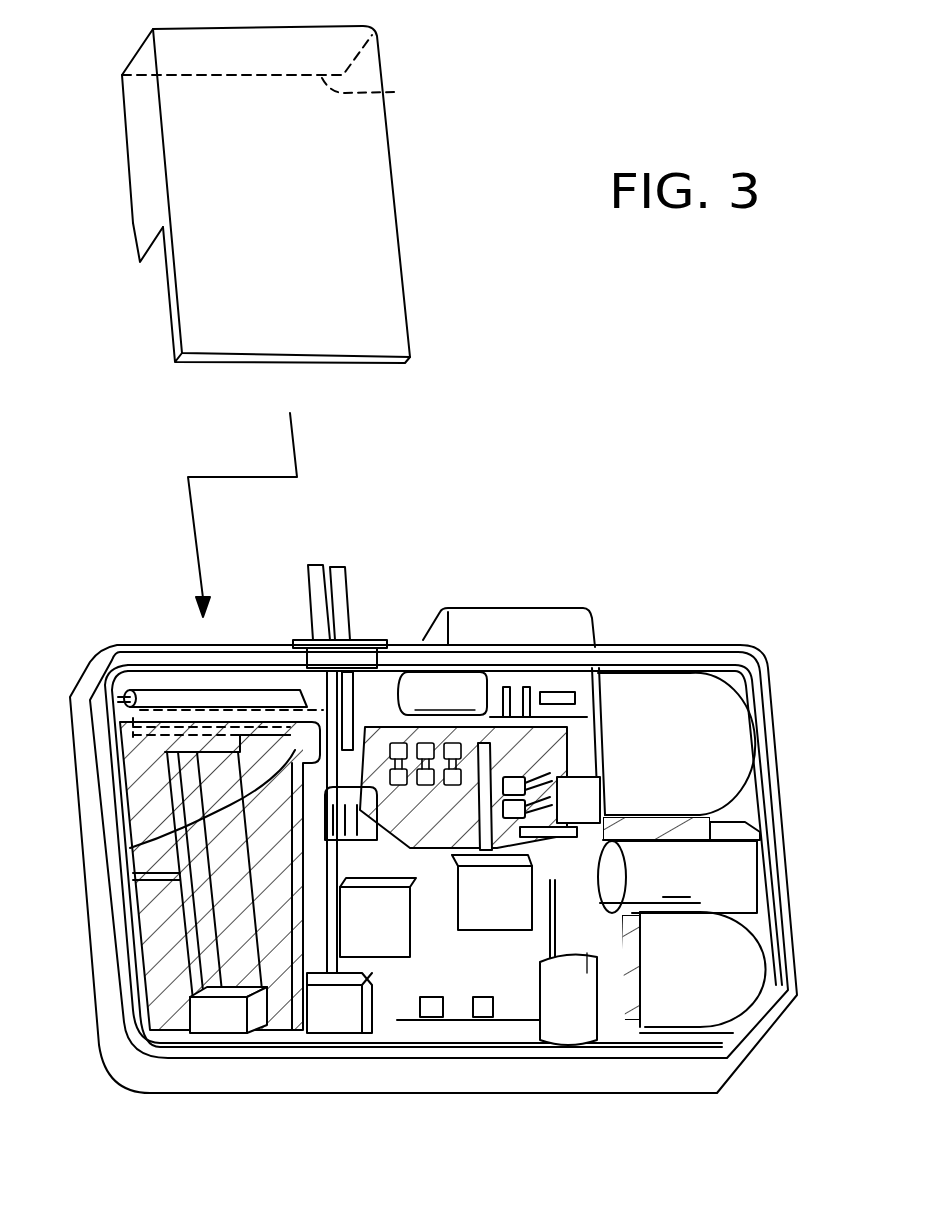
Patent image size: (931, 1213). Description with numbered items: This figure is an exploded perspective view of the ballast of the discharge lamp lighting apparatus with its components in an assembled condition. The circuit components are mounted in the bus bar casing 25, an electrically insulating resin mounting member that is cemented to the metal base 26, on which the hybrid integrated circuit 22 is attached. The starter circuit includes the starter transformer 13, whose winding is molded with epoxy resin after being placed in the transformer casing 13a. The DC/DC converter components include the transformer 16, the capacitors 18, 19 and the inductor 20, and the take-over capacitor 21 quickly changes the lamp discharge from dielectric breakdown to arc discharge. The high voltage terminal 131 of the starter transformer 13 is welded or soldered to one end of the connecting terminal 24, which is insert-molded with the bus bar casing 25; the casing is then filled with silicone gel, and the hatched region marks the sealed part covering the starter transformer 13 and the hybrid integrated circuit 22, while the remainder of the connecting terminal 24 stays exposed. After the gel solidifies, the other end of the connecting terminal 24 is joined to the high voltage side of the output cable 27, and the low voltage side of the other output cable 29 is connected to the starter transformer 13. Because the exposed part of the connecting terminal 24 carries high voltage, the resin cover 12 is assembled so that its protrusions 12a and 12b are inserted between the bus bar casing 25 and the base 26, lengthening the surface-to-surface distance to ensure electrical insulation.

The resin cover 12 is at (202, 338).
The protrusion of resin cover 12a is at (145, 212).
The protrusion of resin cover 12b is at (382, 90).
The starter transformer 13 is at (240, 947).
The transformer casing 13a is at (290, 993).
The high voltage terminal 131 is at (130, 848).
The transformer 16 is at (713, 727).
The capacitor 18 is at (483, 915).
The capacitor 19 is at (747, 883).
The inductor 20 is at (725, 990).
The take-over capacitor 21 is at (577, 1022).
The hybrid integrated circuit 22 is at (468, 802).
The connecting terminal 24 is at (108, 788).
The bus bar casing 25 is at (593, 667).
The base 26 is at (717, 643).
The output cable 27 is at (315, 602).
The output cable 29 is at (342, 592).